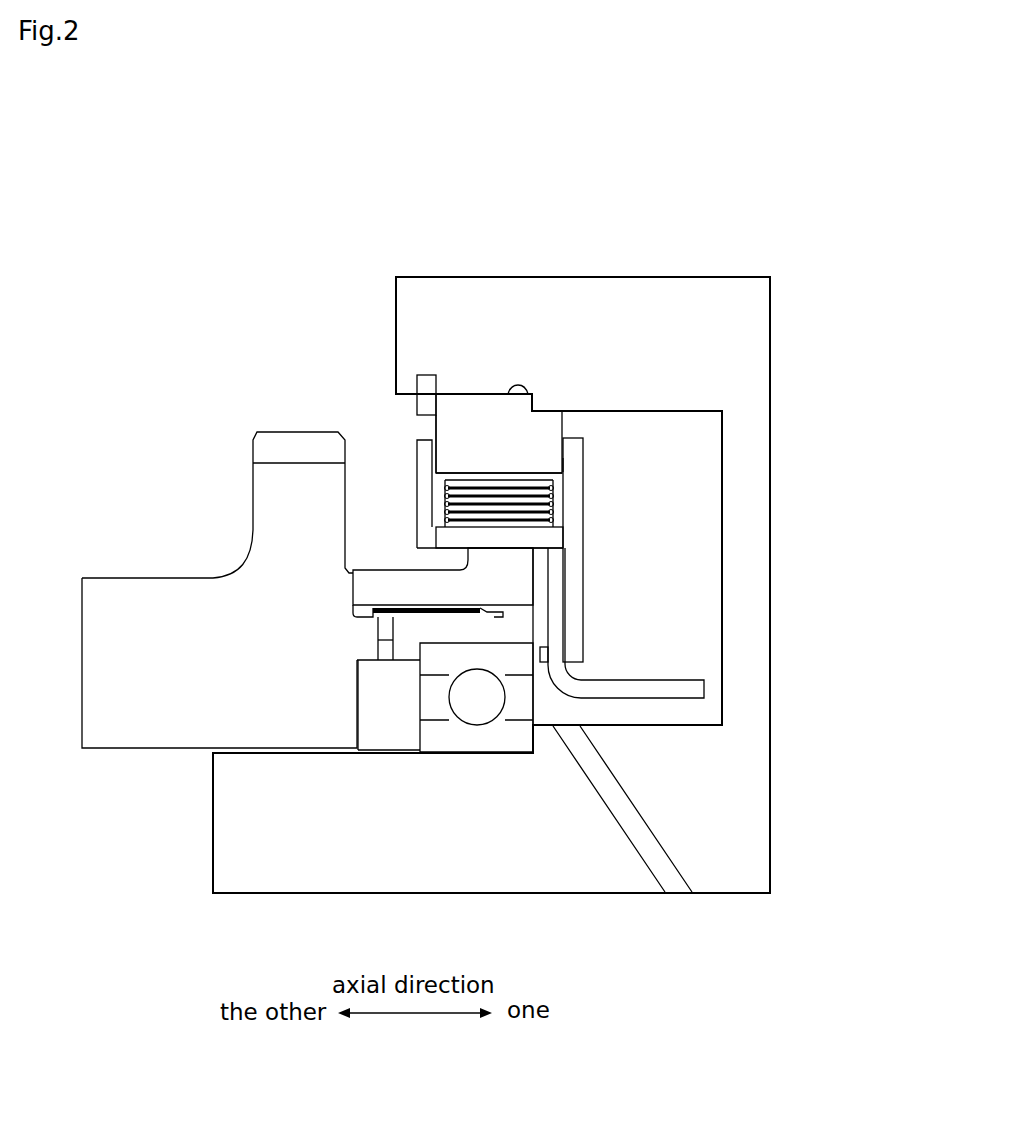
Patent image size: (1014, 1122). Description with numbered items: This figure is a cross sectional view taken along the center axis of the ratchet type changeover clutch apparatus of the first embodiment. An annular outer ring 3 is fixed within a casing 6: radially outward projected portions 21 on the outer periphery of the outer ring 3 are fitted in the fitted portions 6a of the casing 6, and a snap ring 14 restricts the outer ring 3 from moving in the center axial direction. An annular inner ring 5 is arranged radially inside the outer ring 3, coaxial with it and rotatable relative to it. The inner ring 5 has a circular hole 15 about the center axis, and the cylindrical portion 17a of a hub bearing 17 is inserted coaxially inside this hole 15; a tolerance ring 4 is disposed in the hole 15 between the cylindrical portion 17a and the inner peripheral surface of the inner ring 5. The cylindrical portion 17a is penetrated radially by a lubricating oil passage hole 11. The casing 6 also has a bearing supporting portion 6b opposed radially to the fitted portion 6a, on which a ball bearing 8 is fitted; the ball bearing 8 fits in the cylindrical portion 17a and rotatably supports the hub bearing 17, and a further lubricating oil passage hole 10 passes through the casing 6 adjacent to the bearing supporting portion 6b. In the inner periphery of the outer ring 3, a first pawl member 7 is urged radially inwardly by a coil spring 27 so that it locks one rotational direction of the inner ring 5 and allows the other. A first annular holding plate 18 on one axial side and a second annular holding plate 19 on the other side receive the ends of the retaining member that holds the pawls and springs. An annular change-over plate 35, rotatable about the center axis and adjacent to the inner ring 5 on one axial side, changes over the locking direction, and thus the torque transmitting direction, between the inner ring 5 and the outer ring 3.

The casing 6 is at (702, 306).
The fitted portion 6a is at (478, 385).
The bearing supporting portion 6b is at (507, 773).
The snap ring 14 is at (427, 386).
The outer ring 3 is at (536, 424).
The projected portion 21 is at (492, 412).
The second annular holding plate 19 is at (422, 452).
The coil spring 27 is at (548, 503).
The first pawl member 7 is at (546, 538).
The first annular holding plate 18 is at (574, 444).
The change-over plate 35 is at (705, 689).
The hub bearing 17 is at (220, 600).
The cylindrical portion 17a is at (440, 632).
The inner ring 5 is at (405, 587).
The tolerance ring 4 is at (367, 606).
The hole 15 is at (470, 613).
The lubricating oil passage hole 11 is at (385, 662).
The ball bearing 8 is at (474, 744).
The lubricating oil passage hole 10 is at (672, 883).